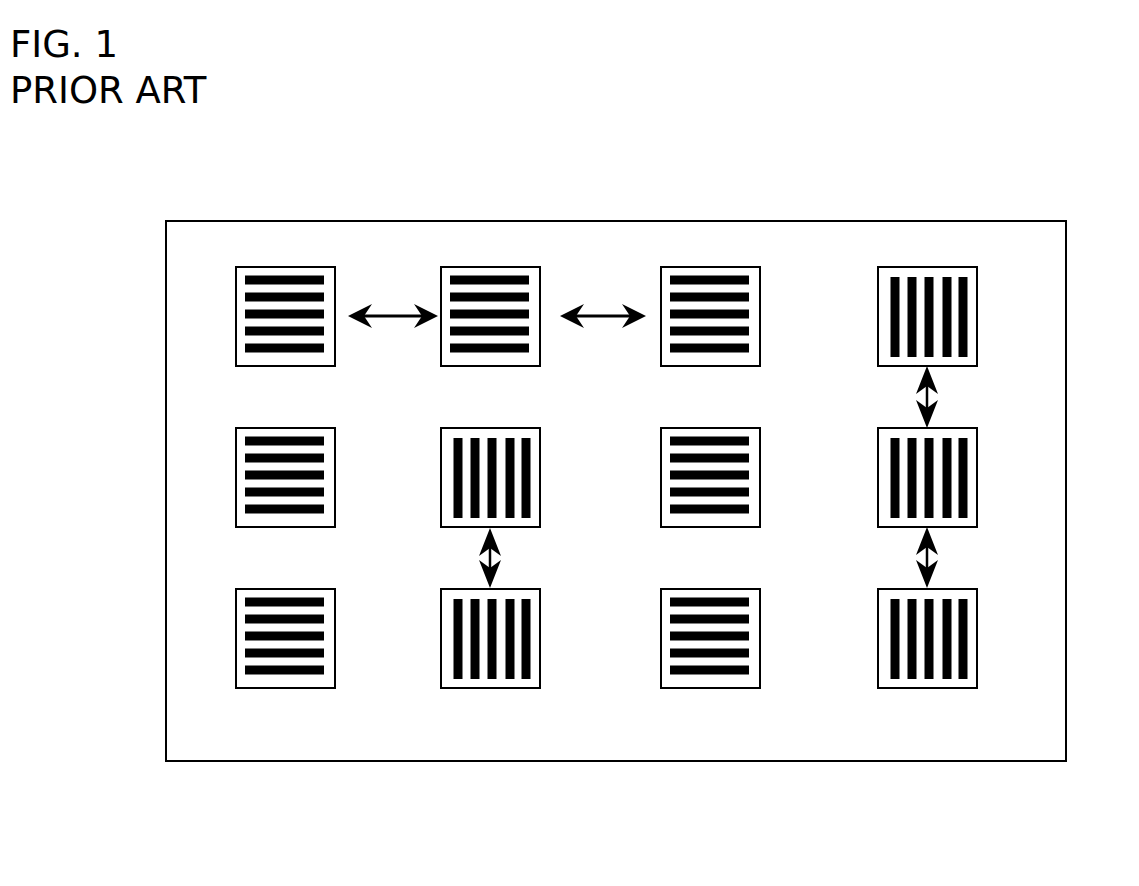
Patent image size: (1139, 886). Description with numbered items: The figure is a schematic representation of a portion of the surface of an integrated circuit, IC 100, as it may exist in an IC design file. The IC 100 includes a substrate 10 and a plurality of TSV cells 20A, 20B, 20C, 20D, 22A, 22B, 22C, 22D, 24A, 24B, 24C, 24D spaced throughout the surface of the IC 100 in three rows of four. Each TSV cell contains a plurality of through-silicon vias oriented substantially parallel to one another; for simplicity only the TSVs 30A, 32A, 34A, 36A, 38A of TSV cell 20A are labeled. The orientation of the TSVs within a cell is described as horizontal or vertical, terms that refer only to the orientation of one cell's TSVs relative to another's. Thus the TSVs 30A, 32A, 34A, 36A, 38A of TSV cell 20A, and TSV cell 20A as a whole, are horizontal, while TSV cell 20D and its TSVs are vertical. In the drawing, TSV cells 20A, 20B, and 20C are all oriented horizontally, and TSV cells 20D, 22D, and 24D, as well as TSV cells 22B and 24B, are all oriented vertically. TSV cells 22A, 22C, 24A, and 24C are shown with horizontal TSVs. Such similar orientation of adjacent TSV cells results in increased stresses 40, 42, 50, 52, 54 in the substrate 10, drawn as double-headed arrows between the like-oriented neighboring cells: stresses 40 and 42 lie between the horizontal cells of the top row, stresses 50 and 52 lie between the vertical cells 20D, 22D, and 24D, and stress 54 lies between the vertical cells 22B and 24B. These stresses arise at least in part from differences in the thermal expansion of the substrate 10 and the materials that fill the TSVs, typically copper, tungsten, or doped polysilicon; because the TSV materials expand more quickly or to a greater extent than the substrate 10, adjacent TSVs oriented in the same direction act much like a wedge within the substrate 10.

The IC 100 is at (589, 126).
The substrate 10 is at (212, 236).
The TSV cell 20A is at (216, 273).
The TSV cell 20B is at (480, 268).
The TSV cell 20C is at (710, 267).
The TSV cell 20D is at (928, 268).
The TSV cell 22A is at (236, 478).
The TSV cell 22B is at (443, 458).
The TSV cell 22C is at (662, 455).
The TSV cell 22D is at (880, 457).
The TSV cell 24A is at (236, 638).
The TSV cell 24B is at (490, 688).
The TSV cell 24C is at (700, 688).
The TSV cell 24D is at (926, 688).
The TSV 30A is at (245, 280).
The TSV 32A is at (245, 297).
The TSV 34A is at (245, 314).
The TSV 36A is at (245, 331).
The TSV 38A is at (245, 348).
The stress 40 is at (389, 315).
The stress 42 is at (600, 314).
The stress 50 is at (934, 398).
The stress 52 is at (934, 558).
The stress 54 is at (497, 560).